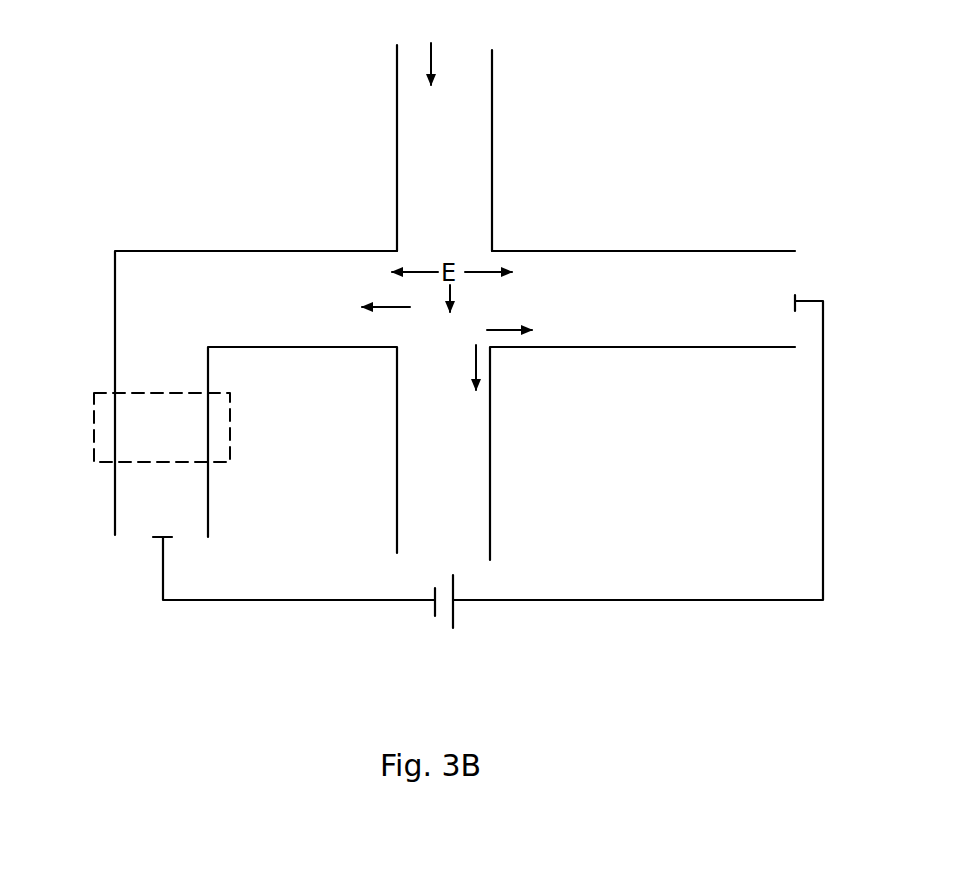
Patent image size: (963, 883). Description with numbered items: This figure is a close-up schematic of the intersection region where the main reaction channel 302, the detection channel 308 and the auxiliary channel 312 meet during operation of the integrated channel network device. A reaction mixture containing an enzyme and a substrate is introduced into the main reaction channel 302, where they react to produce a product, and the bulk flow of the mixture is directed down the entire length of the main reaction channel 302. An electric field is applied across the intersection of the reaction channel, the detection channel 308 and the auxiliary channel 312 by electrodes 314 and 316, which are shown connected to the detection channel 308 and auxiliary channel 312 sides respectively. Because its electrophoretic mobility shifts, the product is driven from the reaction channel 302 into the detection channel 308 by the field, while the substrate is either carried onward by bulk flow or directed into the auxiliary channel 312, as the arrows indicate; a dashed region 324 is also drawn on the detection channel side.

The main reaction channel 302 is at (478, 134).
The detection channel 308 is at (296, 272).
The auxiliary channel 312 is at (656, 270).
The electrode 314 is at (143, 537).
The electrode 316 is at (793, 290).
The detection region 324 is at (103, 410).